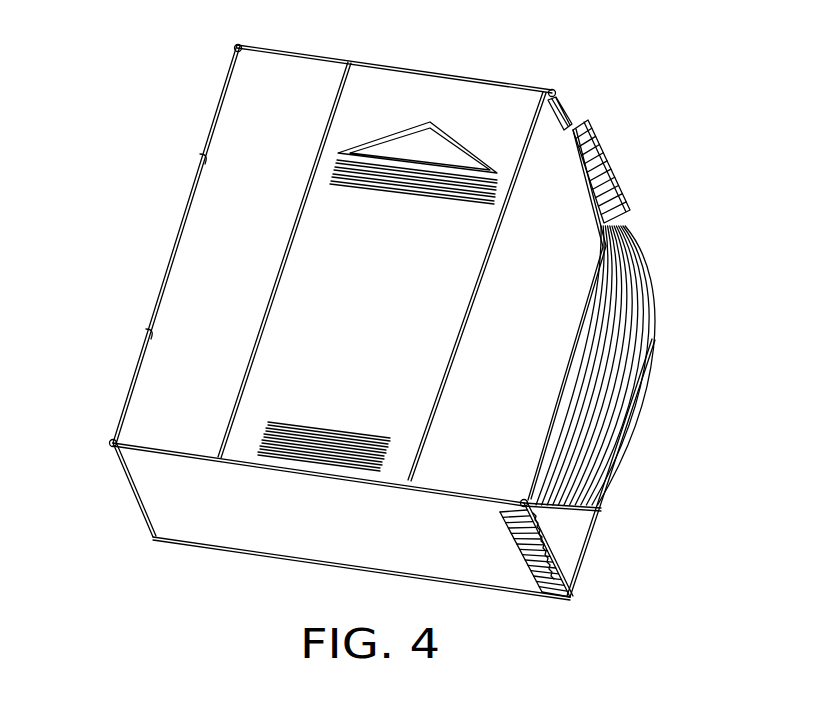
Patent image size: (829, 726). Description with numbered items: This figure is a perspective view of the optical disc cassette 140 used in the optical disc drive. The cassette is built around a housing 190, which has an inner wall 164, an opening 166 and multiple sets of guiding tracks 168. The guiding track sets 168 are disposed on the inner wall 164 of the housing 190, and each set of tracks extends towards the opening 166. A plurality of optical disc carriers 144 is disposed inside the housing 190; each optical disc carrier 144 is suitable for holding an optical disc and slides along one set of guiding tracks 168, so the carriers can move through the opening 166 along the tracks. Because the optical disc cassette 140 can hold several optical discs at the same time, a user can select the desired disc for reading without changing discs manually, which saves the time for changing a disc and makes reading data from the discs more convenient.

The optical disc cassette 140 is at (641, 653).
The optical disc carrier 144 is at (624, 387).
The inner wall 164 is at (567, 571).
The opening 166 is at (642, 431).
The guiding tracks 168 is at (548, 557).
The housing 190 is at (168, 515).